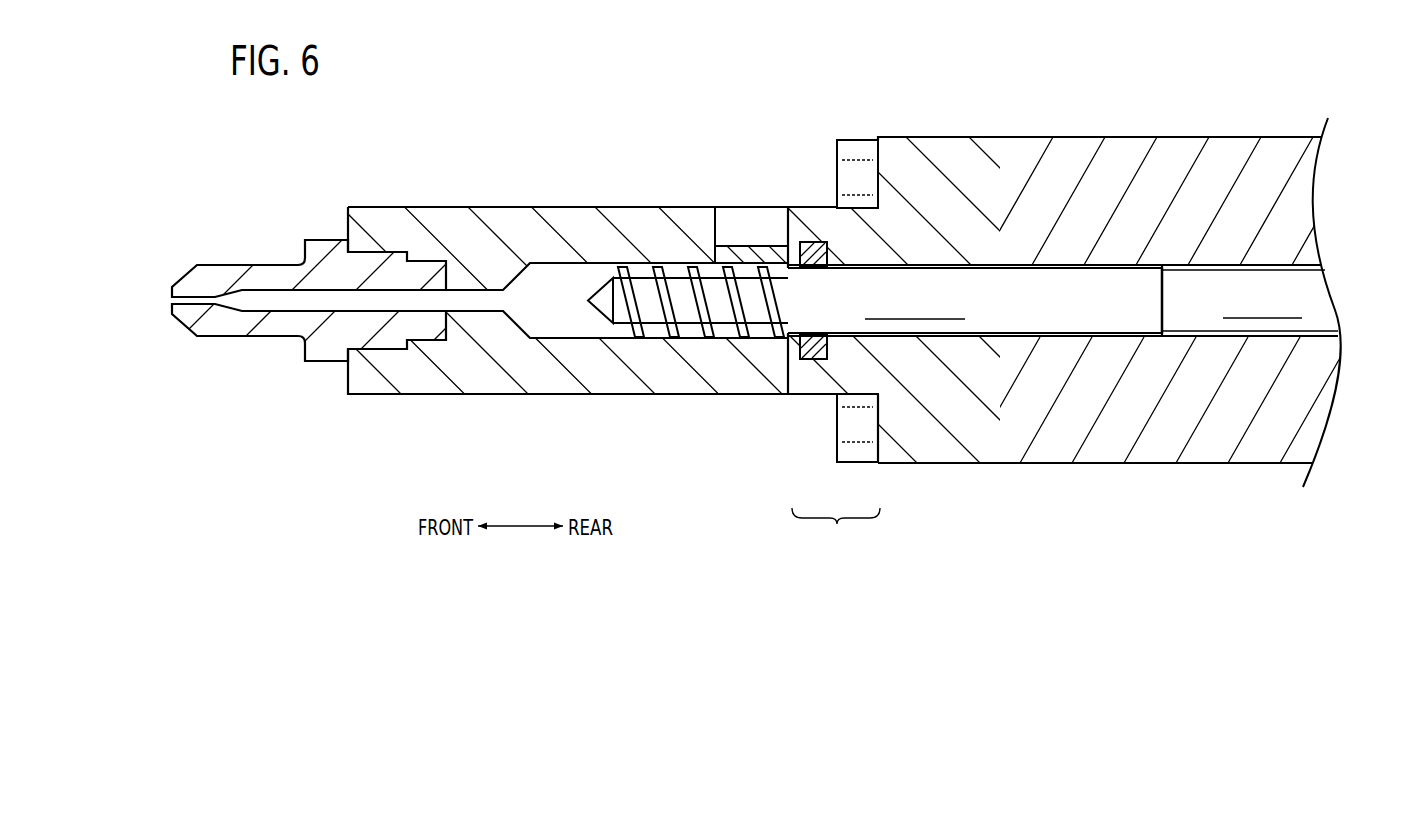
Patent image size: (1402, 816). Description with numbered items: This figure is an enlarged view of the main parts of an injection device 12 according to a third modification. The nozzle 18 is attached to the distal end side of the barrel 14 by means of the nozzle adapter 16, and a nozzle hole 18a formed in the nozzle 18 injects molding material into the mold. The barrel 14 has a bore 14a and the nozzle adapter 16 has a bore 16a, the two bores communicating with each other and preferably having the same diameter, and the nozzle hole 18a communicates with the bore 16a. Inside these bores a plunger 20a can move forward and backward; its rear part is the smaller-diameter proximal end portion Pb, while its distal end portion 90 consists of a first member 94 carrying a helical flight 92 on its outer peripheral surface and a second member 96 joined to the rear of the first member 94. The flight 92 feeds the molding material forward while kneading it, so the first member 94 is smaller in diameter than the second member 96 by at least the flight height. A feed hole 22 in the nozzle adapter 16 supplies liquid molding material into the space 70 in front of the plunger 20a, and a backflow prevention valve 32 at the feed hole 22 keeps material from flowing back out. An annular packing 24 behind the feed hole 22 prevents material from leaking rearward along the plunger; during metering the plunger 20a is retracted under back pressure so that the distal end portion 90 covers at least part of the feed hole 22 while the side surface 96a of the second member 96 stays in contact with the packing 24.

The injection device 12 is at (774, 107).
The barrel 14 is at (1073, 157).
The bore of the barrel 14a is at (1203, 266).
The nozzle adapter 16 is at (505, 222).
The bore of the nozzle adapter 16a is at (556, 268).
The nozzle 18 is at (228, 275).
The nozzle hole 18a is at (201, 298).
The plunger 20a is at (1284, 286).
The feed hole 22 is at (714, 222).
The annular packing 24 is at (812, 242).
The backflow prevention valve 32 is at (760, 257).
The space 70 is at (555, 313).
The distal end portion 90 is at (836, 530).
The helical flight 92 is at (638, 325).
The first member 94 is at (768, 313).
The second member 96 is at (850, 322).
The side surface of the second member 96a is at (1128, 338).
The proximal end portion Pb is at (1307, 307).